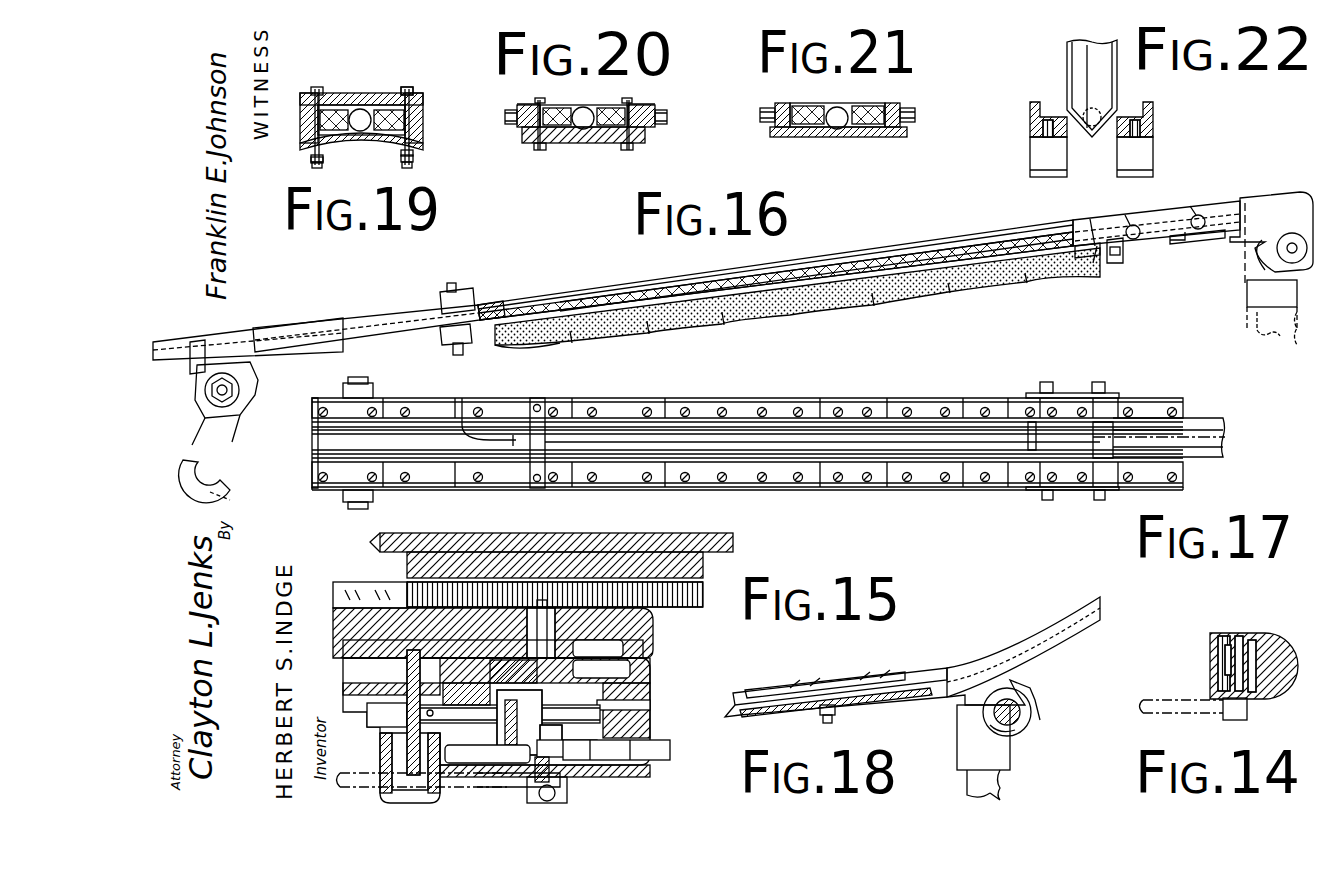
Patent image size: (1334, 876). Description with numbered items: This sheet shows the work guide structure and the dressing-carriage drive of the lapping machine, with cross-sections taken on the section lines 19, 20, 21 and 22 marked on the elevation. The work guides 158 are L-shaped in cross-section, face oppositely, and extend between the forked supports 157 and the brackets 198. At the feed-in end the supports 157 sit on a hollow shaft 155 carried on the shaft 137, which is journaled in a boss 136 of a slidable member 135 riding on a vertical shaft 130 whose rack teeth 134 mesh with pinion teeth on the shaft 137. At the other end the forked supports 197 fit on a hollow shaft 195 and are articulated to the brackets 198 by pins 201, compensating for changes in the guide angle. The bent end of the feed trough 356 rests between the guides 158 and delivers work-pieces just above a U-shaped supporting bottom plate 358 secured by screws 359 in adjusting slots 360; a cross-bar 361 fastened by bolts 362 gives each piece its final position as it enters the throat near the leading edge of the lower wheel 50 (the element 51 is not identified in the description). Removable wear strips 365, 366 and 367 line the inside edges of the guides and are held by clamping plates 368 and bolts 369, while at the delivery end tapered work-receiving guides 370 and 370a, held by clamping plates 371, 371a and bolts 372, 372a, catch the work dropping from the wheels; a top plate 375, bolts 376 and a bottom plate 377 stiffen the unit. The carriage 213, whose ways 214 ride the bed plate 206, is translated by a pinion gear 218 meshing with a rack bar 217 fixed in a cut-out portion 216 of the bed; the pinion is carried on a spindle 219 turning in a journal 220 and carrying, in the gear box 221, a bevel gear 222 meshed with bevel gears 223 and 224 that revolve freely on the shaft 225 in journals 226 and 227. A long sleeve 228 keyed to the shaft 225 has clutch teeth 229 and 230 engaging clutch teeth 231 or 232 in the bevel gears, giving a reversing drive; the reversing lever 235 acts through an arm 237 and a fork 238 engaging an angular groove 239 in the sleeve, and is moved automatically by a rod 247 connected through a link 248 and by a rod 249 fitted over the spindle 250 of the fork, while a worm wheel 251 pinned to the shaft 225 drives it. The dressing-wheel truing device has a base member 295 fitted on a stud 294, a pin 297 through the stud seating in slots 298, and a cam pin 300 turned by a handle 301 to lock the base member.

In FIG. 16, the section line 19 is at (452, 280).
In FIG. 17, the section line 19 is at (472, 386).
In FIG. 16, the section line 20 is at (1102, 203).
In FIG. 16, the section line 21 is at (1130, 222).
In FIG. 16, the section line 22 is at (1237, 193).
In FIG. 16, the lower wheel 50 is at (928, 298).
In FIG. 16, the belt backing 51 is at (822, 305).
In FIG. 16, the vertical shaft 130 is at (1258, 332).
In FIG. 18, the vertical shaft 130 is at (967, 788).
In FIG. 16, the rack teeth 134 is at (1295, 335).
In FIG. 18, the rack teeth 134 is at (1000, 786).
In FIG. 16, the slidable member 135 is at (1250, 302).
In FIG. 18, the slidable member 135 is at (1010, 755).
In FIG. 16, the boss 136 is at (1274, 305).
In FIG. 16, the shaft 137 is at (1290, 208).
In FIG. 18, the shaft 137 is at (1020, 710).
In FIG. 16, the hollow shaft 155 is at (1285, 262).
In FIG. 18, the hollow shaft 155 is at (1025, 730).
In FIG. 22, the forked supports 157 is at (1043, 128).
In FIG. 16, the forked supports 157 is at (1300, 192).
In FIG. 18, the forked supports 157 is at (1025, 690).
In FIG. 19, the work guides 158 is at (300, 121).
In FIG. 20, the work guides 158 is at (530, 105).
In FIG. 21, the work guides 158 is at (783, 103).
In FIG. 22, the work guides 158 is at (1034, 102).
In FIG. 16, the work guides 158 is at (322, 325).
In FIG. 17, the work guides 158 is at (800, 398).
In FIG. 18, the work guides 158 is at (735, 695).
In FIG. 17, the hollow shaft 195 is at (232, 486).
In FIG. 17, the forked supports 197 is at (330, 390).
In FIG. 17, the brackets 198 is at (200, 388).
In FIG. 17, the pins 201 is at (205, 403).
In FIG. 15, the bed plate 206 is at (407, 565).
In FIG. 15, the carriage 213 is at (652, 635).
In FIG. 15, the ways 214 is at (340, 585).
In FIG. 15, the rectangular cut-out portion 216 is at (700, 565).
In FIG. 15, the rack bar 217 is at (700, 607).
In FIG. 17, the pinion gear 218 is at (535, 545).
In FIG. 15, the pinion gear 218 is at (535, 553).
In FIG. 15, the spindle 219 is at (493, 651).
In FIG. 15, the journal 220 is at (598, 650).
In FIG. 15, the gear box 221 is at (632, 777).
In FIG. 15, the bevel gear 222 is at (510, 688).
In FIG. 15, the bevel gear 223 is at (470, 755).
In FIG. 15, the bevel gear 224 is at (621, 675).
In FIG. 15, the shaft 225 is at (375, 720).
In FIG. 15, the journal 226 is at (470, 695).
In FIG. 15, the journal 227 is at (650, 676).
In FIG. 15, the long sleeve 228 is at (601, 668).
In FIG. 15, the clutch teeth 229 is at (519, 722).
In FIG. 15, the clutch teeth 230 is at (568, 736).
In FIG. 15, the clutch teeth 231 is at (475, 660).
In FIG. 15, the clutch teeth 232 is at (650, 705).
In FIG. 15, the controlling and reversing lever 235 is at (555, 796).
In FIG. 15, the arm 237 is at (487, 755).
In FIG. 15, the fork 238 is at (569, 751).
In FIG. 15, the angular groove 239 is at (550, 629).
In FIG. 15, the rod 247 is at (345, 788).
In FIG. 15, the link 248 is at (505, 780).
In FIG. 15, the rod 249 is at (670, 748).
In FIG. 15, the spindle 250 is at (560, 780).
In FIG. 15, the worm wheel 251 is at (405, 760).
In FIG. 14, the stud 294 is at (1282, 645).
In FIG. 14, the base member 295 is at (1280, 690).
In FIG. 14, the pin 297 is at (1258, 640).
In FIG. 14, the slots 298 is at (1238, 636).
In FIG. 14, the cam pin 300 is at (1230, 636).
In FIG. 14, the handle 301 is at (1195, 700).
In FIG. 22, the feed trough 356 is at (1070, 55).
In FIG. 17, the feed trough 356 is at (1210, 458).
In FIG. 18, the feed trough 356 is at (1075, 610).
In FIG. 20, the supporting bottom plate 358 is at (517, 108).
In FIG. 21, the supporting bottom plate 358 is at (868, 138).
In FIG. 16, the supporting bottom plate 358 is at (1200, 240).
In FIG. 17, the supporting bottom plate 358 is at (1035, 490).
In FIG. 18, the supporting bottom plate 358 is at (890, 710).
In FIG. 20, the screws 359 is at (505, 117).
In FIG. 21, the screws 359 is at (760, 118).
In FIG. 16, the screws 359 is at (1185, 240).
In FIG. 17, the screws 359 is at (1097, 382).
In FIG. 21, the slots 360 is at (765, 108).
In FIG. 16, the slots 360 is at (1185, 215).
In FIG. 20, the cross-bar 361 is at (535, 152).
In FIG. 16, the cross-bar 361 is at (1122, 262).
In FIG. 17, the cross-bar 361 is at (1028, 436).
In FIG. 18, the cross-bar 361 is at (820, 712).
In FIG. 20, the bolts 362 is at (548, 152).
In FIG. 16, the bolts 362 is at (1108, 262).
In FIG. 18, the bolts 362 is at (832, 722).
In FIG. 20, the removable wear strips 365 is at (580, 108).
In FIG. 21, the removable wear strips 365 is at (835, 107).
In FIG. 16, the removable wear strips 365 is at (1030, 233).
In FIG. 17, the removable wear strips 365 is at (998, 434).
In FIG. 18, the removable wear strips 365 is at (780, 690).
In FIG. 16, the removable wear strips 366 is at (888, 250).
In FIG. 17, the removable wear strips 366 is at (875, 434).
In FIG. 19, the removable wear strips 367 is at (368, 98).
In FIG. 16, the removable wear strips 367 is at (656, 283).
In FIG. 17, the removable wear strips 367 is at (720, 435).
In FIG. 20, the removable clamping plates 368 is at (555, 112).
In FIG. 21, the removable clamping plates 368 is at (805, 110).
In FIG. 16, the removable clamping plates 368 is at (628, 276).
In FIG. 17, the removable clamping plates 368 is at (672, 408).
In FIG. 18, the removable clamping plates 368 is at (860, 675).
In FIG. 17, the bolts 369 is at (618, 398).
In FIG. 19, the removable work-receiving guides 370 is at (366, 144).
In FIG. 16, the removable work-receiving guides 370 is at (490, 303).
In FIG. 17, the removable work-receiving guides 370 is at (570, 434).
In FIG. 16, the work-receiving guides 370a is at (235, 340).
In FIG. 17, the work-receiving guides 370a is at (308, 462).
In FIG. 19, the removable clamping plates 371 is at (330, 84).
In FIG. 17, the removable clamping plates 371 is at (430, 410).
In FIG. 17, the clamping plates 371a is at (310, 410).
In FIG. 17, the bolts 372 is at (478, 412).
In FIG. 17, the bolts 372a is at (308, 400).
In FIG. 19, the top plate 375 is at (413, 96).
In FIG. 16, the top plate 375 is at (440, 300).
In FIG. 17, the top plate 375 is at (545, 398).
In FIG. 19, the bolts 376 is at (318, 165).
In FIG. 16, the bolts 376 is at (450, 283).
In FIG. 17, the bolts 376 is at (545, 405).
In FIG. 19, the bottom plate 377 is at (412, 162).
In FIG. 17, the bottom plate 377 is at (478, 420).